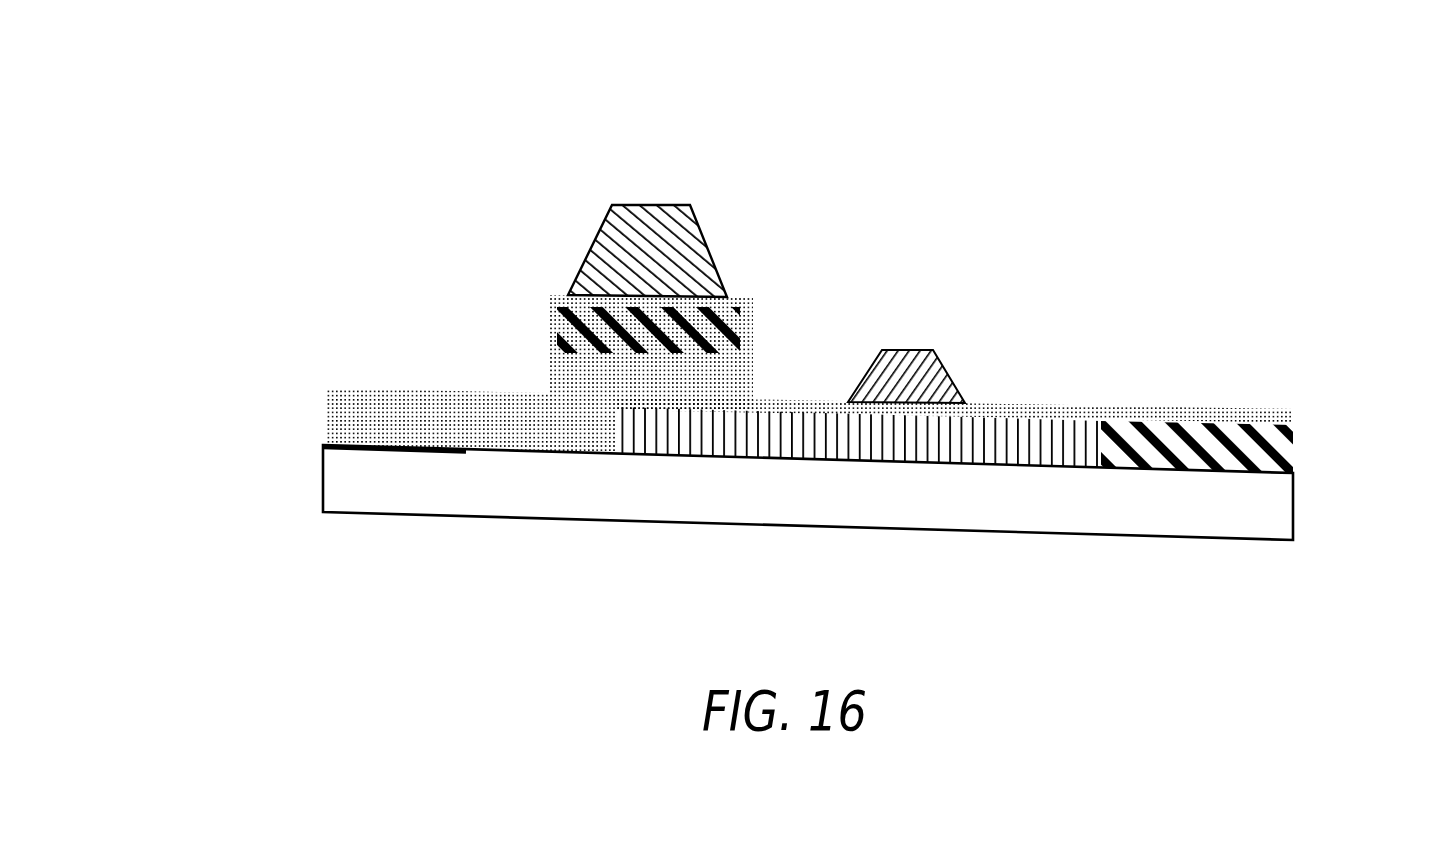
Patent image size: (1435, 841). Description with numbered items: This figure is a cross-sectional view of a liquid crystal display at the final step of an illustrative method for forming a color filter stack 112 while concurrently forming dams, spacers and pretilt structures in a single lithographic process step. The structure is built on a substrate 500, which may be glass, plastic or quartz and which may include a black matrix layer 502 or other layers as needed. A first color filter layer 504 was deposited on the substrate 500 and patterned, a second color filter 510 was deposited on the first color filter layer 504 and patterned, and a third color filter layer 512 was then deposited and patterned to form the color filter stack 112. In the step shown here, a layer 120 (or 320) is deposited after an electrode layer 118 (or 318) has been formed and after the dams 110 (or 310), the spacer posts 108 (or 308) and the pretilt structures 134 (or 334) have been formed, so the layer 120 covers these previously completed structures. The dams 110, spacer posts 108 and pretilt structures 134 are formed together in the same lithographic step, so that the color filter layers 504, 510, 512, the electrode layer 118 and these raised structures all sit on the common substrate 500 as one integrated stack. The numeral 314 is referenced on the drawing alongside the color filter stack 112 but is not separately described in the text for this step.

The dam 110 is at (745, 241).
The dam 310 is at (745, 241).
The spacer post 108 is at (745, 241).
The spacer post 308 is at (745, 241).
The layer 120 is at (755, 221).
The layer 320 is at (697, 220).
The color filter stack 112 is at (732, 351).
The gate dielectric layer 314 is at (753, 320).
The pretilt structure 134 is at (1031, 329).
The pretilt structure 334 is at (960, 383).
The electrode layer 118 is at (1245, 391).
The electrode layer 318 is at (1183, 413).
The third color filter layer 512 is at (1280, 447).
The second color filter 510 is at (360, 413).
The black matrix layer 502 is at (323, 445).
The first color filter layer 504 is at (868, 457).
The substrate 500 is at (1283, 518).